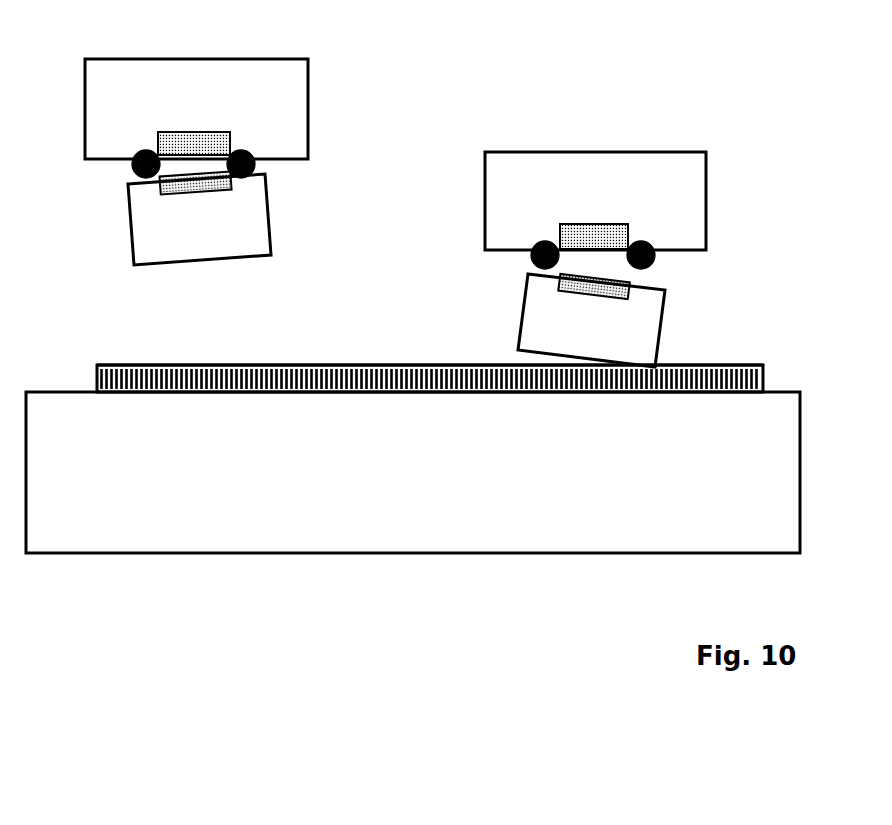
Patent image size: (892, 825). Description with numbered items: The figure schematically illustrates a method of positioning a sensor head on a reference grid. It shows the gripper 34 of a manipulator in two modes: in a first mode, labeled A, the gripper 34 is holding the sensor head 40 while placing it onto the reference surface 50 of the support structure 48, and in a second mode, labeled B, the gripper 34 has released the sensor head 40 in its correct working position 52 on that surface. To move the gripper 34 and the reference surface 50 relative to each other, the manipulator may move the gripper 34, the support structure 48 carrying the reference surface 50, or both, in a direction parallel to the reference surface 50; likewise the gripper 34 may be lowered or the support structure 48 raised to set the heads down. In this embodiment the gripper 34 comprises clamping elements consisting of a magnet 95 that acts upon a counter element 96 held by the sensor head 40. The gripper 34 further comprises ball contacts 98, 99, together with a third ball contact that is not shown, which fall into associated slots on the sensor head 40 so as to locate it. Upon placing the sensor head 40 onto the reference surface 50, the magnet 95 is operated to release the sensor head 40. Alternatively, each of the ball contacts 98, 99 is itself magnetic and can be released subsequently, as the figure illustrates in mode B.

The gripper 34 is at (133, 73).
The magnet 95 is at (213, 130).
The counter element 96 is at (198, 192).
The ball contact 98 is at (128, 167).
The ball contact 99 is at (253, 163).
The sensor head 40 is at (140, 237).
The working position 52 is at (200, 363).
The reference surface 50 is at (743, 363).
The support structure 48 is at (778, 387).